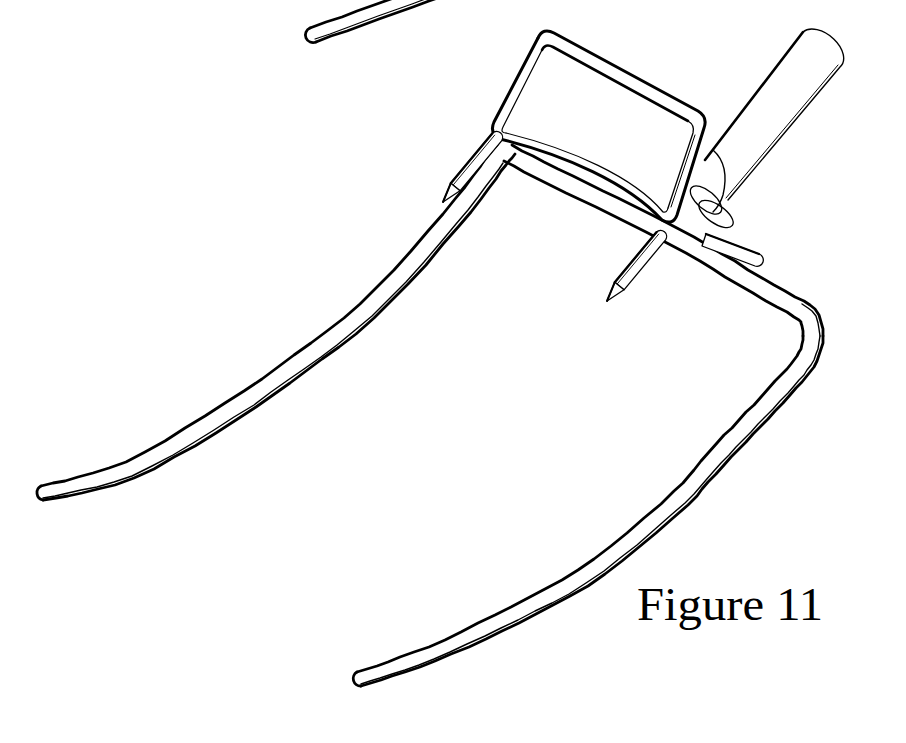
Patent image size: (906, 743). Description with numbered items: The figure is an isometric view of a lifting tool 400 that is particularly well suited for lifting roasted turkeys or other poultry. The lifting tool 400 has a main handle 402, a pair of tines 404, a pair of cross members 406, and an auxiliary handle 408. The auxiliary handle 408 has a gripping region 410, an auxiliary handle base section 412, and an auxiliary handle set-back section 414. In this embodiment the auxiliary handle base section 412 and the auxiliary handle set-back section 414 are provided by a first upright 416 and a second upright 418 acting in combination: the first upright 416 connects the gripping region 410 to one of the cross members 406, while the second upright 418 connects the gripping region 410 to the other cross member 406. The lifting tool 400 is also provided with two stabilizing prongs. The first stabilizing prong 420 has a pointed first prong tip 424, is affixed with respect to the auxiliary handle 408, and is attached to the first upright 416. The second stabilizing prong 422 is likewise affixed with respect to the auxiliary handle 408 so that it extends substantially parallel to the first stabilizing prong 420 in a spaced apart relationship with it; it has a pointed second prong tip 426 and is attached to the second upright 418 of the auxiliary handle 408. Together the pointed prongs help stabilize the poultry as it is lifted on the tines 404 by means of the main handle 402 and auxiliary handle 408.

The lifting tool 400 is at (316, 248).
The main handle 402 is at (772, 100).
The pair of tines 404 is at (627, 535).
The pair of cross members 406 is at (788, 302).
The auxiliary handle 408 is at (640, 63).
The gripping region 410 is at (656, 96).
The auxiliary handle base section 412 is at (727, 242).
The auxiliary handle set-back section 414 is at (712, 186).
The first upright 416 is at (505, 98).
The second upright 418 is at (678, 180).
The first stabilizing prong 420 is at (413, 175).
The second stabilizing prong 422 is at (585, 284).
The first prong tip 424 is at (448, 167).
The second prong tip 426 is at (615, 288).